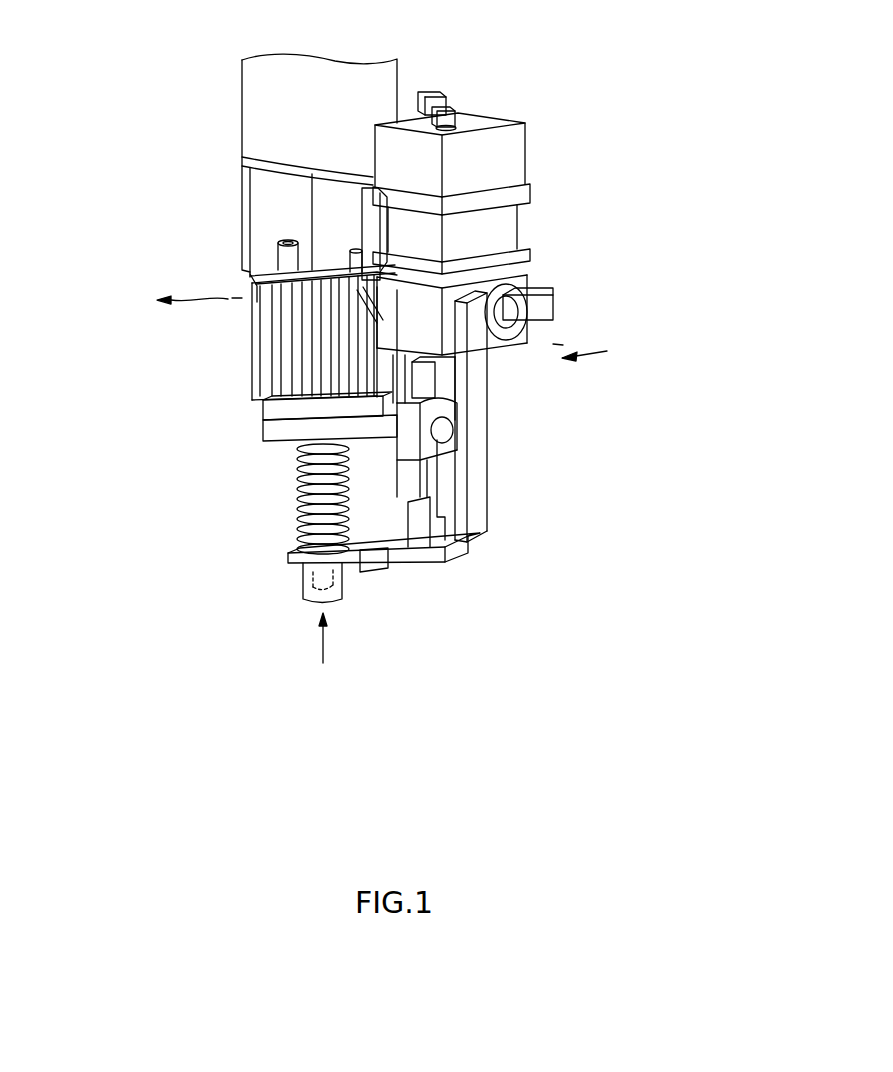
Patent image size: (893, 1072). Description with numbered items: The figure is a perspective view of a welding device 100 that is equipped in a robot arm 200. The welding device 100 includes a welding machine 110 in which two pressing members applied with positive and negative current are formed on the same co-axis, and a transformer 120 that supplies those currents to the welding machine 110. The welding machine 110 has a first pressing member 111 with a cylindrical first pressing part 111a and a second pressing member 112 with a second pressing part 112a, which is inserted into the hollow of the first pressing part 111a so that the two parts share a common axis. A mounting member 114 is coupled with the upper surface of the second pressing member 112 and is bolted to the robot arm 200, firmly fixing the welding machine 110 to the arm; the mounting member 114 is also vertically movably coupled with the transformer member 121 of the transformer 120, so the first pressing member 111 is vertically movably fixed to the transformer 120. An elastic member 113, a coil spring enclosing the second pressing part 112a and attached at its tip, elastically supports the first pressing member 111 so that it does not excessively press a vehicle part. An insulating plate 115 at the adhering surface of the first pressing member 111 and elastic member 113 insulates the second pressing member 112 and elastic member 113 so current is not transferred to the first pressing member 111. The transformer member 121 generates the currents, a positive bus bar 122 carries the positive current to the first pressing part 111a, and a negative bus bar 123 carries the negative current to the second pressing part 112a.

The welding device 100 is at (524, 98).
The welding machine 110 is at (142, 262).
The first pressing member 111 is at (245, 542).
The first pressing part 111a is at (303, 588).
The second pressing member 112 is at (269, 437).
The second pressing part 112a is at (303, 569).
The elastic member 113 is at (264, 462).
The mounting member 114 is at (242, 240).
The insulating plate 115 is at (388, 557).
The transformer 120 is at (651, 231).
The transformer member 121 is at (528, 193).
The positive bus bar 122 is at (472, 548).
The negative bus bar 123 is at (450, 442).
The robot arm 200 is at (250, 107).